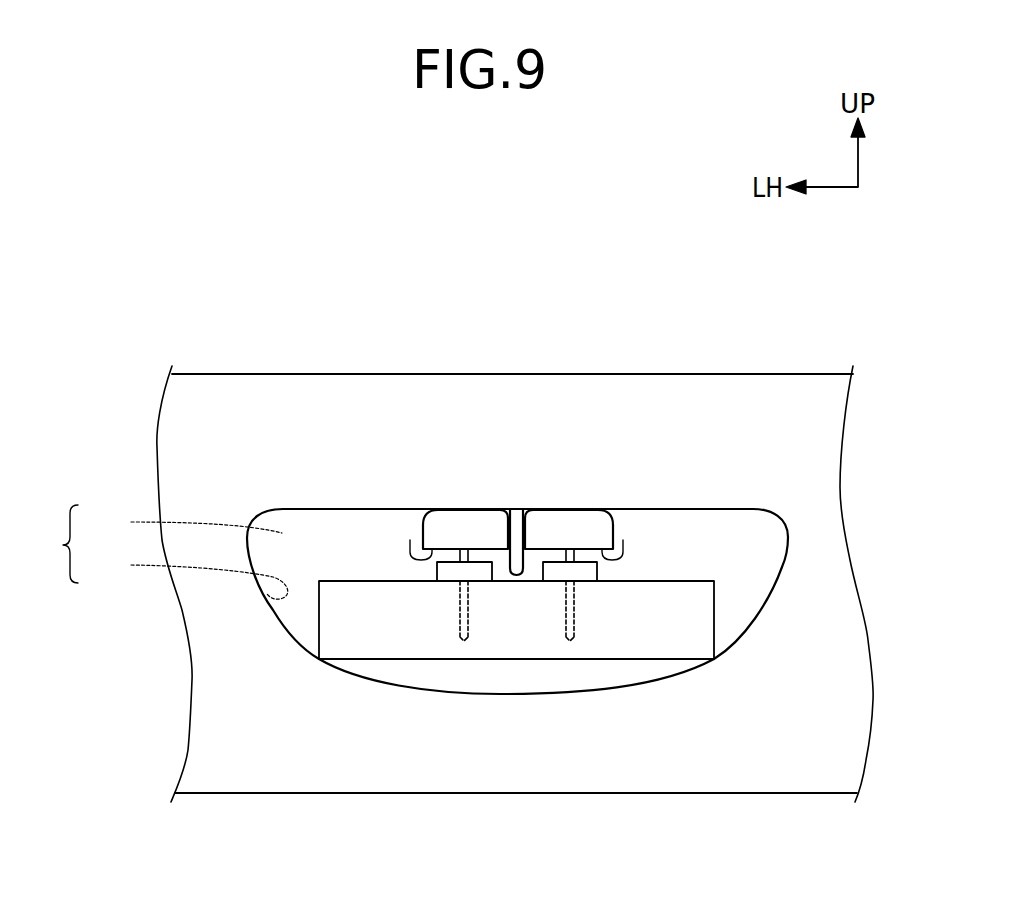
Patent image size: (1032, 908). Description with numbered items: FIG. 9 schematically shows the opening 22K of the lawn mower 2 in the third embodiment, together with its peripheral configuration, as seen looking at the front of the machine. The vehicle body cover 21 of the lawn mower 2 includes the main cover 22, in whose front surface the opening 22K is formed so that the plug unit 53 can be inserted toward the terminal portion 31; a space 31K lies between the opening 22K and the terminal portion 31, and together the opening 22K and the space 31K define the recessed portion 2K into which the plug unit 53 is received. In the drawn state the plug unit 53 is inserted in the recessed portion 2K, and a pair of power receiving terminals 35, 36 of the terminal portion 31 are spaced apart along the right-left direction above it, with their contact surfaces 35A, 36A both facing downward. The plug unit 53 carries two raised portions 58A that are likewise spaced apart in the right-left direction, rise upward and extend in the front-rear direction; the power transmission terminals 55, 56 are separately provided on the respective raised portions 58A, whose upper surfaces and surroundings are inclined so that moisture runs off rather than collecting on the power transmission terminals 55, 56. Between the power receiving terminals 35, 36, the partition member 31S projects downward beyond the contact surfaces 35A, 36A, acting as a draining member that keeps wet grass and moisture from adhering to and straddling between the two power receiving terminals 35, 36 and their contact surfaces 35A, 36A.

The lawn mower 2 is at (782, 350).
The vehicle body cover 21 is at (242, 372).
The main cover 22 is at (183, 415).
The recessed portion 2K is at (53, 544).
The space 31K is at (182, 523).
The opening 22K is at (185, 576).
The terminal portion 31 is at (635, 525).
The partition member 31S is at (517, 508).
The power receiving terminal 35 is at (463, 527).
The contact surface 35A is at (410, 540).
The power receiving terminal 36 is at (573, 527).
The contact surface 36A is at (623, 540).
The raised portion 58A is at (437, 572).
The plug unit 53 is at (615, 660).
The power transmission terminal 55 is at (464, 641).
The power transmission terminal 56 is at (570, 641).